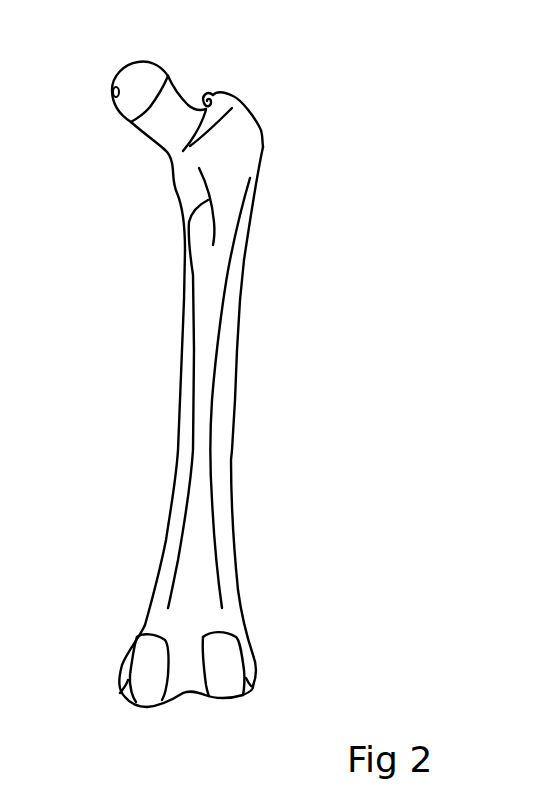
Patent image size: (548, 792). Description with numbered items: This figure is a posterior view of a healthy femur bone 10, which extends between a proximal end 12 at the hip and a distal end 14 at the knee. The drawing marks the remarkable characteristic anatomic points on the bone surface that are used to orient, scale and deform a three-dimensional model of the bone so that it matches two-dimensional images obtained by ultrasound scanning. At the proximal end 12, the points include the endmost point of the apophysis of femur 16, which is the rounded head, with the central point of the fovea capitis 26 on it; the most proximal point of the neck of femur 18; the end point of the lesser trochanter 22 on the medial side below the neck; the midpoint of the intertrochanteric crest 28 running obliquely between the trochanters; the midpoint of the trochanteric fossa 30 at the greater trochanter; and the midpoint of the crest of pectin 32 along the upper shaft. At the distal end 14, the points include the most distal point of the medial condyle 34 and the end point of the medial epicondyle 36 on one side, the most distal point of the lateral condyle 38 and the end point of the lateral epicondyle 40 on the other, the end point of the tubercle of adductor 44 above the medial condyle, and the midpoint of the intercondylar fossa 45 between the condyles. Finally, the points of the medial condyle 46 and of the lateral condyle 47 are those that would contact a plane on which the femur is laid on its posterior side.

The femur bone 10 is at (238, 375).
The proximal end 12 is at (278, 144).
The distal end 14 is at (250, 628).
The apophysis of femur 16 is at (113, 78).
The neck of femur 18 is at (203, 111).
The lesser trochanter 22 is at (166, 163).
The fovea capitis 26 is at (108, 92).
The intertrochanteric crest 28 is at (232, 108).
The trochanteric fossa 30 is at (208, 93).
The crest of pectin 32 is at (187, 226).
The medial condyle 34 is at (153, 707).
The medial epicondyle 36 is at (148, 675).
The lateral condyle 38 is at (232, 700).
The lateral epicondyle 40 is at (228, 675).
The tubercle of adductor 44 is at (138, 633).
The intercondylar fossa 45 is at (188, 678).
The point of the medial condyle in contact with a plane on posterior side 46 is at (125, 688).
The point of the lateral condyle in contact with a plane on posterior side 47 is at (248, 682).